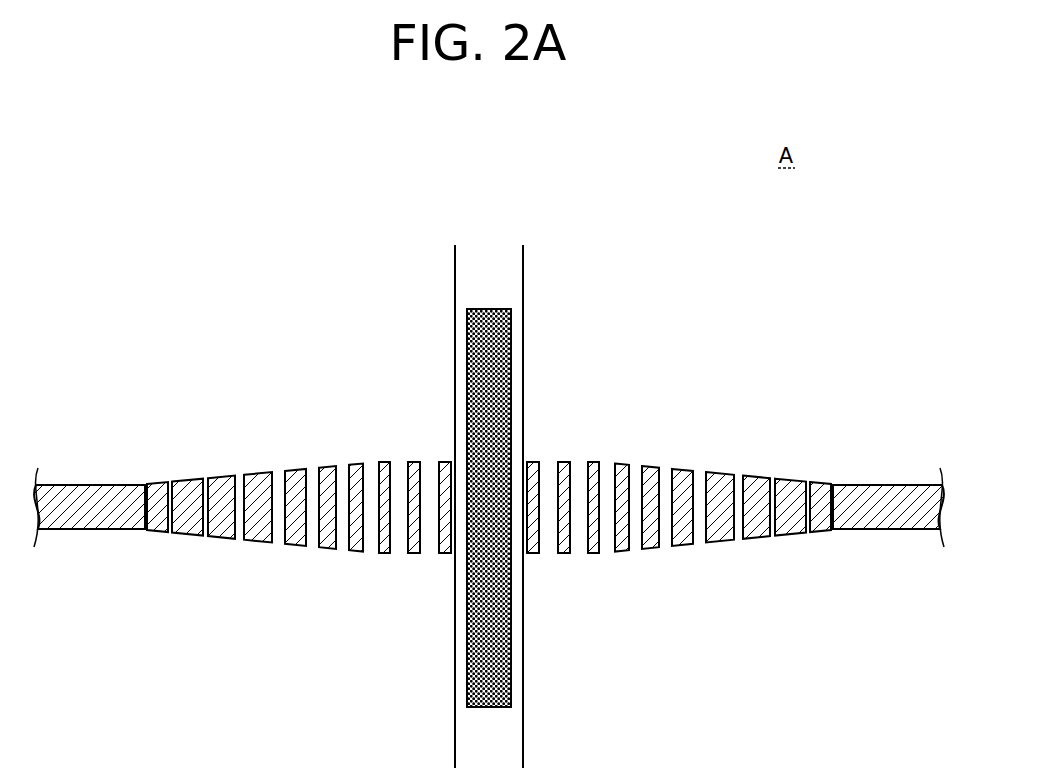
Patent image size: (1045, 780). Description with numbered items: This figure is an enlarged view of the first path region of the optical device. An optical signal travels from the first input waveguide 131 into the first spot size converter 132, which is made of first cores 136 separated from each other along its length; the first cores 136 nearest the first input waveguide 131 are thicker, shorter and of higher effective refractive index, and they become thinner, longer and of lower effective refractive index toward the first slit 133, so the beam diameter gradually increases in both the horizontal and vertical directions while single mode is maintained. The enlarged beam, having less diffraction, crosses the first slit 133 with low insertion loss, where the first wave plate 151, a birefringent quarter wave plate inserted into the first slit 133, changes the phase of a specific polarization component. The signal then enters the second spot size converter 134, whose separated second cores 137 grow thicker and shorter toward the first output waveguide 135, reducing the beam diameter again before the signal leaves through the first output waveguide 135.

The first input waveguide 131 is at (92, 495).
The first spot size converter 132 is at (299, 511).
The first slit 133 is at (488, 270).
The second spot size converter 134 is at (679, 511).
The first output waveguide 135 is at (882, 497).
The first cores 136 is at (255, 477).
The second cores 137 is at (718, 477).
The first wave plate 151 is at (497, 354).